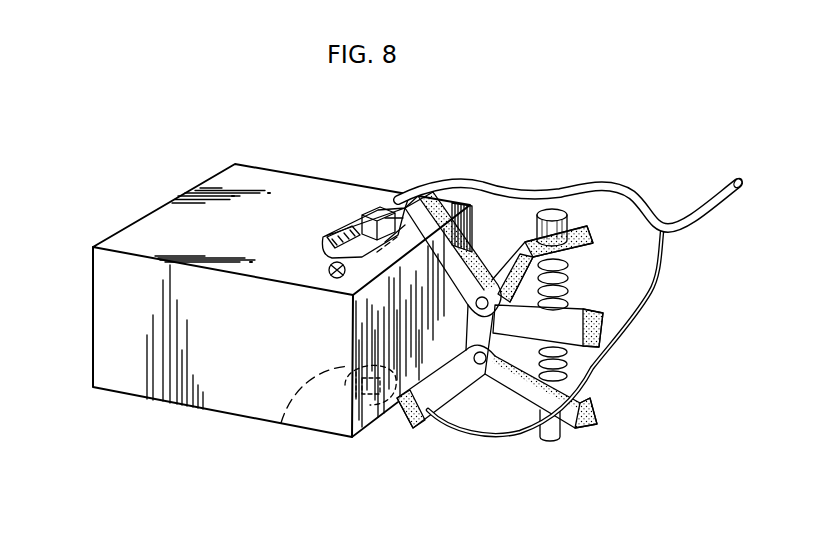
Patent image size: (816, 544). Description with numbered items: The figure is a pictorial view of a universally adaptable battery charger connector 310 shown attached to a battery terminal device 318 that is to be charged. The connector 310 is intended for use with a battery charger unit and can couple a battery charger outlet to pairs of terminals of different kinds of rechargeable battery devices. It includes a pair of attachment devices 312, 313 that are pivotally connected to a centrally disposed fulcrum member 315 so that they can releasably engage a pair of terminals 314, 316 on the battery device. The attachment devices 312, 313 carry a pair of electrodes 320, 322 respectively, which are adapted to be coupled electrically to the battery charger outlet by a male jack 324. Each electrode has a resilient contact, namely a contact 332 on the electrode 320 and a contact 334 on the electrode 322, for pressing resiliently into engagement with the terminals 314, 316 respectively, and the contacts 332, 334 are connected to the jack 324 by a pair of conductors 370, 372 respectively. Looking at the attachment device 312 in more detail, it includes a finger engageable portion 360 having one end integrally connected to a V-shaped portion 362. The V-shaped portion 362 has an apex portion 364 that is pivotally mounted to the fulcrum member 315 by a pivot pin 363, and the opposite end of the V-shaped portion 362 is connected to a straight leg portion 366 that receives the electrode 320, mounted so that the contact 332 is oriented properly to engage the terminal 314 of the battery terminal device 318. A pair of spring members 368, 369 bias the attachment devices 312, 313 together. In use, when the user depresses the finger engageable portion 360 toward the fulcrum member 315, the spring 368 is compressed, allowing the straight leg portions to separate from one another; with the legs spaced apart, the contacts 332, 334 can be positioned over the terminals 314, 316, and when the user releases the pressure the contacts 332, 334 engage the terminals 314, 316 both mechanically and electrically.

The universally adaptable battery charger connector 310 is at (128, 414).
The attachment device 312 is at (474, 222).
The attachment device 313 is at (404, 434).
The terminal 314 is at (334, 222).
The fulcrum member 315 is at (598, 297).
The terminal 316 is at (275, 430).
The battery terminal device 318 is at (112, 285).
The electrode 320 is at (343, 216).
The electrode 322 is at (377, 422).
The male jack 324 is at (735, 167).
The contact 332 is at (328, 258).
The contact 334 is at (382, 425).
The finger engageable portion 360 is at (585, 228).
The V-shaped portion 362 is at (455, 208).
The pivot pin 363 is at (597, 337).
The apex portion 364 is at (507, 222).
The straight leg portion 366 is at (402, 196).
The spring member 368 is at (580, 272).
The spring member 369 is at (582, 389).
The conductor 370 is at (577, 182).
The conductor 372 is at (665, 270).